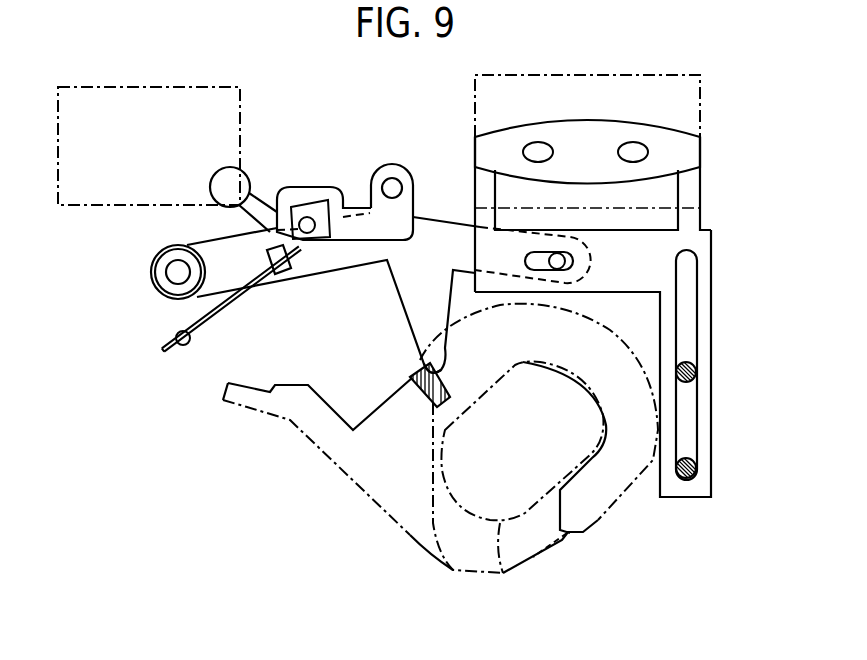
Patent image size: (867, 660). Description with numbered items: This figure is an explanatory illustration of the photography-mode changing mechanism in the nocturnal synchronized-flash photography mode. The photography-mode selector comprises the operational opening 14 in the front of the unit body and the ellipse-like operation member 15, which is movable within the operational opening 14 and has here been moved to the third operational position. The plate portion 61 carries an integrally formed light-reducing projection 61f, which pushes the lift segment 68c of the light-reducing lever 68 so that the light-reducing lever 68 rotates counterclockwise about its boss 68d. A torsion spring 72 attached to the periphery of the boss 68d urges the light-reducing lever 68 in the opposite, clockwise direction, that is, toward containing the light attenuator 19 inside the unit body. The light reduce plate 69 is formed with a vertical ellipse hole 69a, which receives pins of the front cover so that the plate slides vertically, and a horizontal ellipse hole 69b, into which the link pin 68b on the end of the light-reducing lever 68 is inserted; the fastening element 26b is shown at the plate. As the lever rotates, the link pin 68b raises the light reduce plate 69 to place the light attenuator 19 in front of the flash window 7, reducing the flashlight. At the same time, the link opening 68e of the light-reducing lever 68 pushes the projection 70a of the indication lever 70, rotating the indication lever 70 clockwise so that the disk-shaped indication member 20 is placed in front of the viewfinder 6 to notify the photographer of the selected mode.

The view finder 6 is at (101, 204).
The flash window 7 is at (512, 78).
The operational opening 14 is at (567, 534).
The operation member 15 is at (507, 578).
The light attenuator 19 is at (641, 133).
The indication member 20 is at (216, 186).
The fastening screw 26b is at (697, 372).
The plate portion 61 is at (598, 520).
The light-reducing projection 61f is at (420, 385).
The light-reducing lever 68 is at (437, 222).
The link pin 68b is at (558, 270).
The lift segment 68c is at (427, 347).
The boss 68d is at (160, 276).
The link opening 68e is at (312, 242).
The light reduce plate 69 is at (708, 302).
The vertical ellipse hole 69a is at (694, 422).
The horizontal ellipse hole 69b is at (574, 262).
The indication lever 70 is at (389, 168).
The projection 70a is at (300, 222).
The torsion spring 72 is at (173, 328).